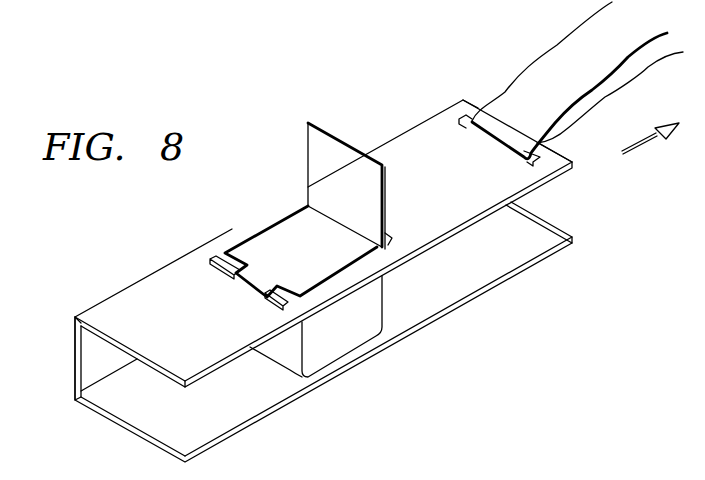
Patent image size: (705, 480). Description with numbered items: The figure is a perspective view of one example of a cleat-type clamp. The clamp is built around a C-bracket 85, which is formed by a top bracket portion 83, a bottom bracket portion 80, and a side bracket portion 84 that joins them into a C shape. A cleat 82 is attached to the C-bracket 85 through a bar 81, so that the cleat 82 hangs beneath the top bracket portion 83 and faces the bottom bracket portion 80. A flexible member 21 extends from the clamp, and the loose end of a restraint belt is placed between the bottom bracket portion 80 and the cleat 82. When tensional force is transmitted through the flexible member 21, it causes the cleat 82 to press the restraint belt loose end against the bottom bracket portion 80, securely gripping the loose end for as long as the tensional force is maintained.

The flexible member 21 is at (577, 45).
The bottom bracket portion 80 is at (117, 425).
The bar 81 is at (225, 254).
The cleat 82 is at (348, 338).
The top bracket portion 83 is at (128, 300).
The side bracket portion 84 is at (75, 357).
The C-bracket 85 is at (392, 105).